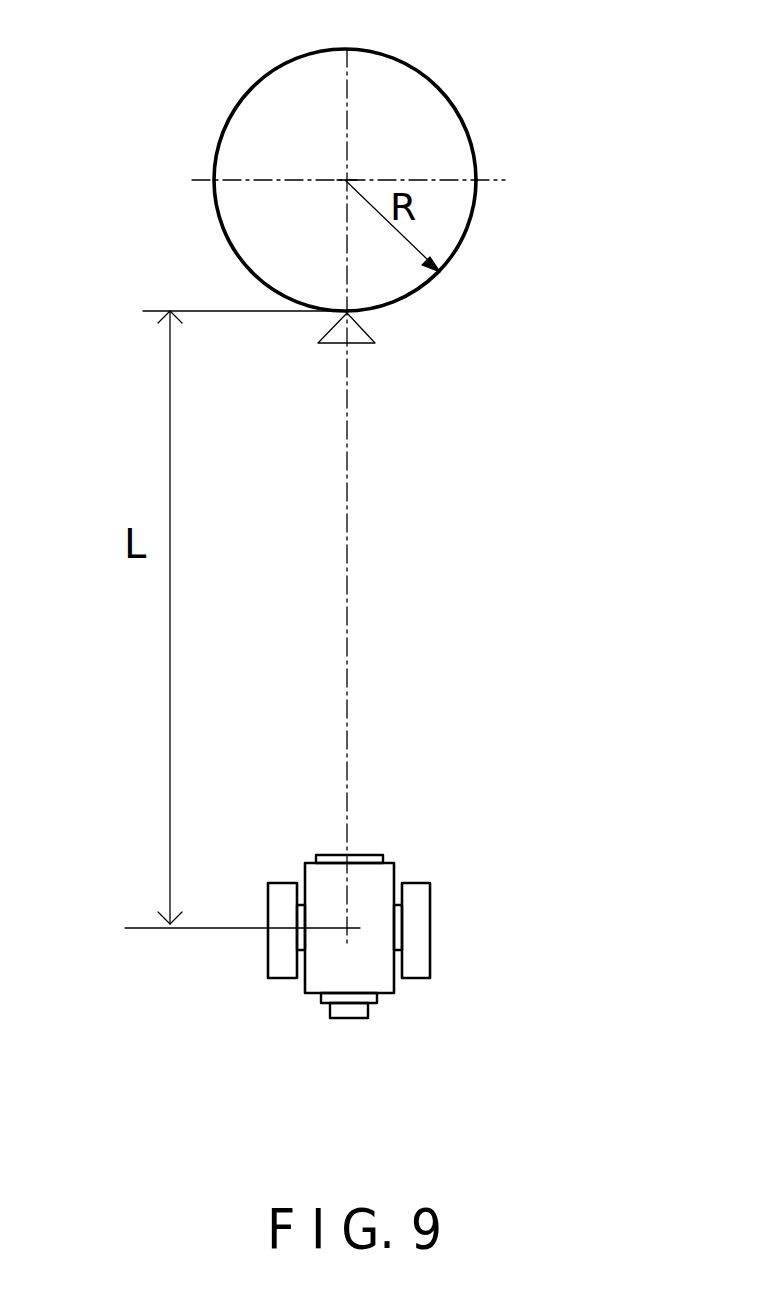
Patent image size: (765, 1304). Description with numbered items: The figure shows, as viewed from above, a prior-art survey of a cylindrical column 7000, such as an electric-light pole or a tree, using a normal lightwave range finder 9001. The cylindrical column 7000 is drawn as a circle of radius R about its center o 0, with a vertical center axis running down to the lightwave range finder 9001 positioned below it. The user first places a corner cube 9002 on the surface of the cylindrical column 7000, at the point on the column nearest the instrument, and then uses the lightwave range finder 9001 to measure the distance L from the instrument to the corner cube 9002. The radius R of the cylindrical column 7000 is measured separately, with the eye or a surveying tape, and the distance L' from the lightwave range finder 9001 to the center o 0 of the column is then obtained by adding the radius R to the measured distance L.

The cylindrical column 7000 is at (473, 147).
The center 0 is at (347, 180).
The corner cube 9002 is at (376, 339).
The lightwave range finder 9001 is at (385, 982).